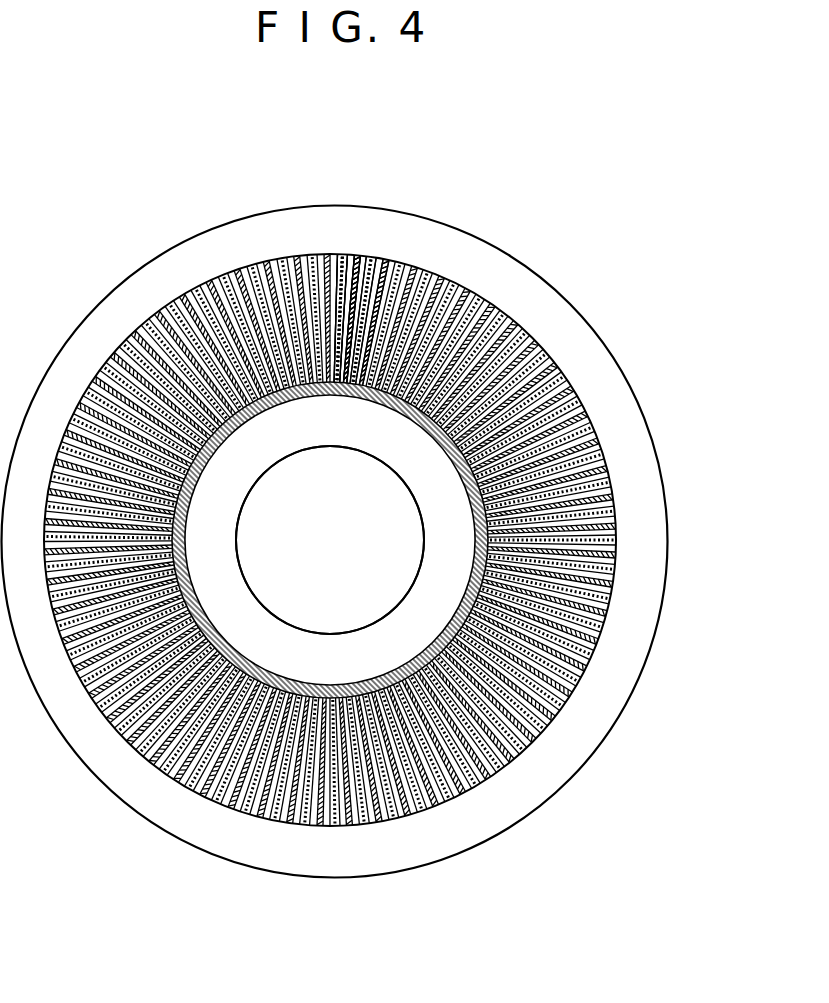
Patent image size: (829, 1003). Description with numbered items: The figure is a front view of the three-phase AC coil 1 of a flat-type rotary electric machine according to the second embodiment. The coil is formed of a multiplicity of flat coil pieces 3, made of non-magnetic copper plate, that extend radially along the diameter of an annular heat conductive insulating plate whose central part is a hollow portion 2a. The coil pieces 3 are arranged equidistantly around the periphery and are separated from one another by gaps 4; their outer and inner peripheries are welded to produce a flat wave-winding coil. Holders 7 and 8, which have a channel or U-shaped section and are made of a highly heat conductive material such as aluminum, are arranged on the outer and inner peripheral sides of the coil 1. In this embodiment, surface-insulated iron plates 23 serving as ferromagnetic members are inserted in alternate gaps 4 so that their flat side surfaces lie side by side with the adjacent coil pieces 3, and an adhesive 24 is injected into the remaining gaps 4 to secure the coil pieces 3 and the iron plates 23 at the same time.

The three-phase AC coil 1 is at (640, 414).
The hollow portion 2a is at (239, 562).
The coil piece 3 is at (337, 253).
The gap 4 is at (373, 250).
The holder 7 is at (272, 218).
The holder 8 is at (437, 503).
The iron plate 23 is at (363, 250).
The adhesive 24 is at (345, 253).